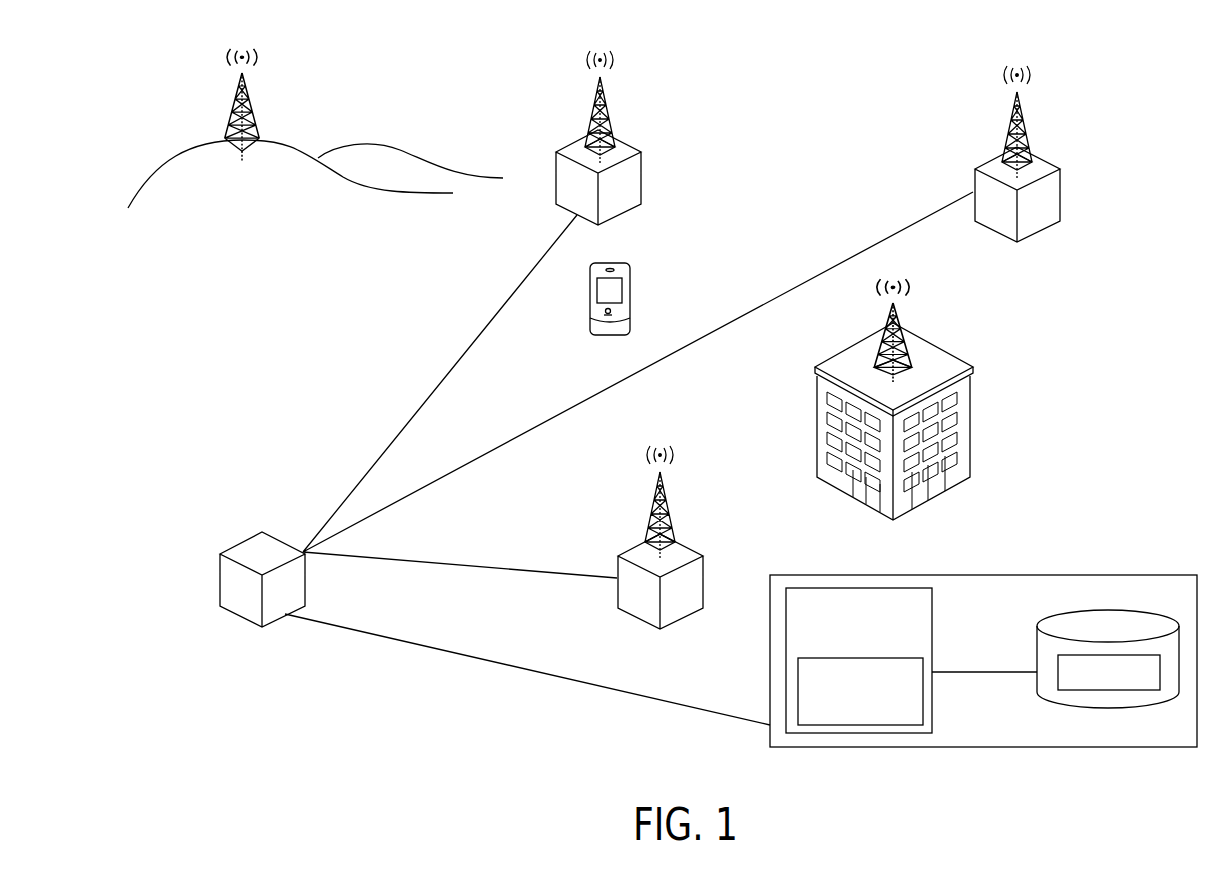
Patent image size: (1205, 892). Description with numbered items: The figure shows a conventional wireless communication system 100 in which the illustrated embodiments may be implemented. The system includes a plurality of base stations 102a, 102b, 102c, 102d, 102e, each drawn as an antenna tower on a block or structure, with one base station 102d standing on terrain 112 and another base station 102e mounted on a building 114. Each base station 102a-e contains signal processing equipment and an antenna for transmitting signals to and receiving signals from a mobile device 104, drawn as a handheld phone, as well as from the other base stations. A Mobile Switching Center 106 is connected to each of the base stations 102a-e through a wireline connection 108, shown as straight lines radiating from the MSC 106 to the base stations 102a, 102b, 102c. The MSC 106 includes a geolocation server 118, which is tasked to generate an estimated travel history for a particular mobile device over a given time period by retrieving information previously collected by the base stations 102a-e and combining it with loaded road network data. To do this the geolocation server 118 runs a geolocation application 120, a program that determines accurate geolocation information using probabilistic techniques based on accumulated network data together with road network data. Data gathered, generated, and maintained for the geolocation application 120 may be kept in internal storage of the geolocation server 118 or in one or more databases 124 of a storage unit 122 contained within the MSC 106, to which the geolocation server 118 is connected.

The wireless communication system 100 is at (829, 122).
The base station 102a is at (625, 142).
The base station 102b is at (1047, 162).
The base station 102c is at (690, 547).
The base station 102d is at (257, 115).
The base station 102e is at (943, 348).
The mobile device 104 is at (630, 265).
The Mobile Switching Center 106 is at (247, 542).
The wireline connection 108 is at (462, 358).
The terrain (hill) 112 is at (208, 142).
The building 114 is at (930, 500).
The geolocation server 118 is at (787, 643).
The geolocation application 120 is at (863, 720).
The storage unit 122 is at (1102, 610).
The database 124 is at (1072, 685).